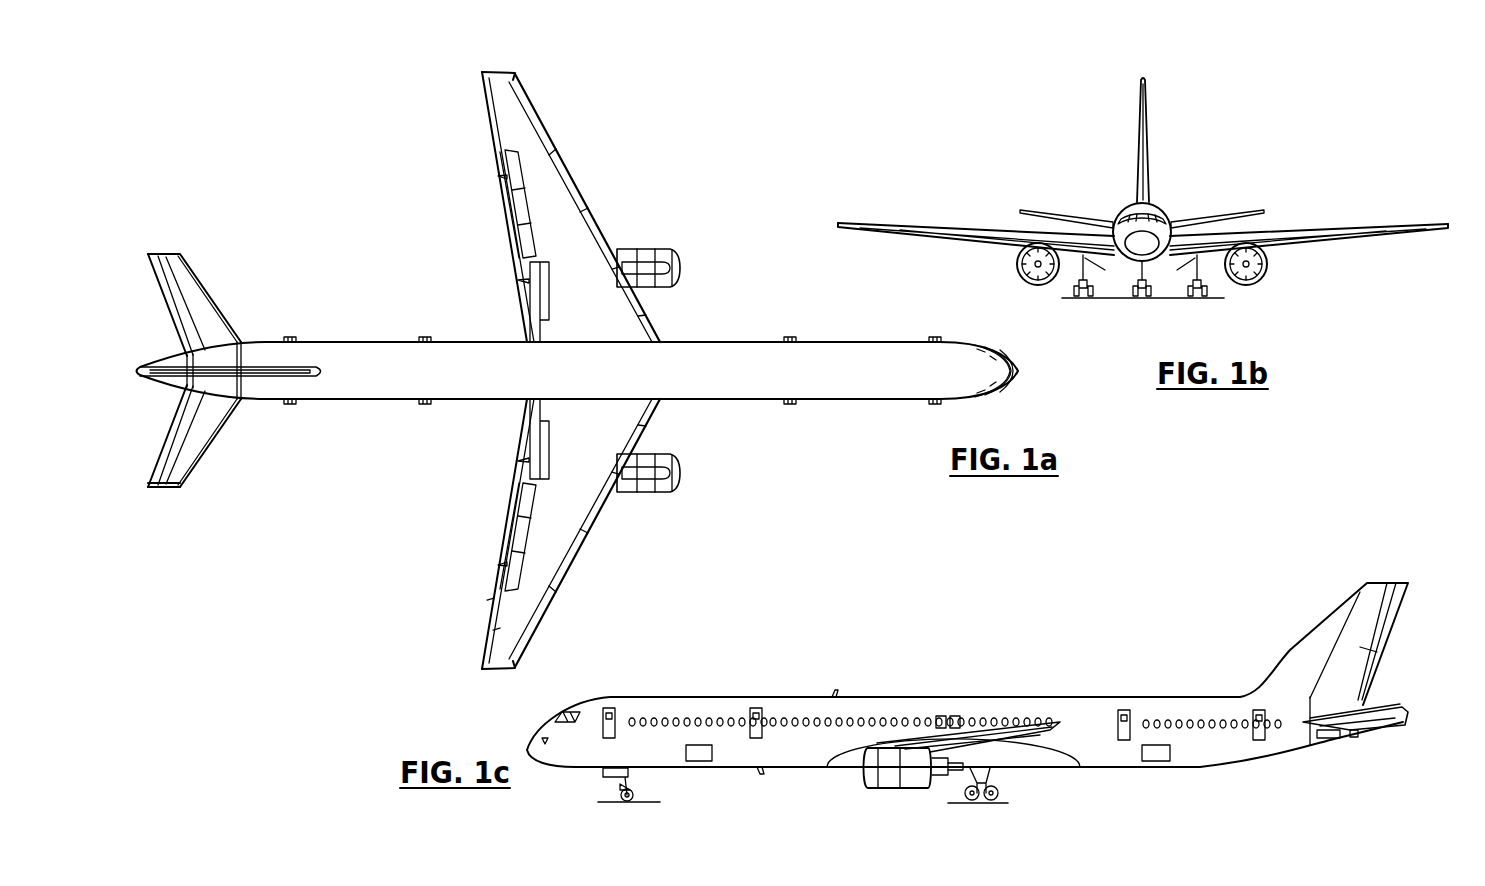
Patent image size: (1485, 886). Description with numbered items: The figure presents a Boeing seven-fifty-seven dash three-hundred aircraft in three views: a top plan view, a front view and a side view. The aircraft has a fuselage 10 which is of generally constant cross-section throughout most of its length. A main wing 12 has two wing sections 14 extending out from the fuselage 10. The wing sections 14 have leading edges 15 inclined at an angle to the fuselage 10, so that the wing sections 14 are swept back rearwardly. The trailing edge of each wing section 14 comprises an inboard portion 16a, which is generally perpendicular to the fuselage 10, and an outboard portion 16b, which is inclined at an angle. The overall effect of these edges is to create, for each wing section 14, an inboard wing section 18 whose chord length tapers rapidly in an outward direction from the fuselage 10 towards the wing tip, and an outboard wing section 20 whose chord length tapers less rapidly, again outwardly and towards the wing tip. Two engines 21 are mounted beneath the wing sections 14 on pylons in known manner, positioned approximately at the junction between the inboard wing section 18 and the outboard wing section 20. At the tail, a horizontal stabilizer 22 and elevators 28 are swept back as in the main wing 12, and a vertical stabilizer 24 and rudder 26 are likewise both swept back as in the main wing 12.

In FIG. 1A, the fuselage 10 is at (861, 390).
In FIG. 1B, the fuselage 10 is at (1160, 272).
In FIG. 1C, the fuselage 10 is at (698, 702).
In FIG. 1A, the main wing 12 is at (553, 538).
In FIG. 1A, the wing sections 14 is at (565, 247).
In FIG. 1B, the wing sections 14 is at (932, 222).
In FIG. 1A, the leading edges 15 is at (645, 305).
In FIG. 1A, the inboard portion 16a is at (528, 438).
In FIG. 1A, the outboard portion 16b is at (506, 563).
In FIG. 1A, the inboard wing section 18 is at (578, 305).
In FIG. 1A, the outboard wing section 20 is at (524, 609).
In FIG. 1A, the engines 21 is at (670, 493).
In FIG. 1B, the engines 21 is at (1025, 276).
In FIG. 1C, the engines 21 is at (895, 778).
In FIG. 1A, the horizontal stabilizer 22 is at (202, 438).
In FIG. 1C, the horizontal stabilizer 22 is at (1383, 722).
In FIG. 1B, the vertical stabilizer 24 is at (1143, 127).
In FIG. 1C, the vertical stabilizer 24 is at (1320, 650).
In FIG. 1C, the rudder 26 is at (1400, 604).
In FIG. 1A, the elevators 28 is at (155, 478).